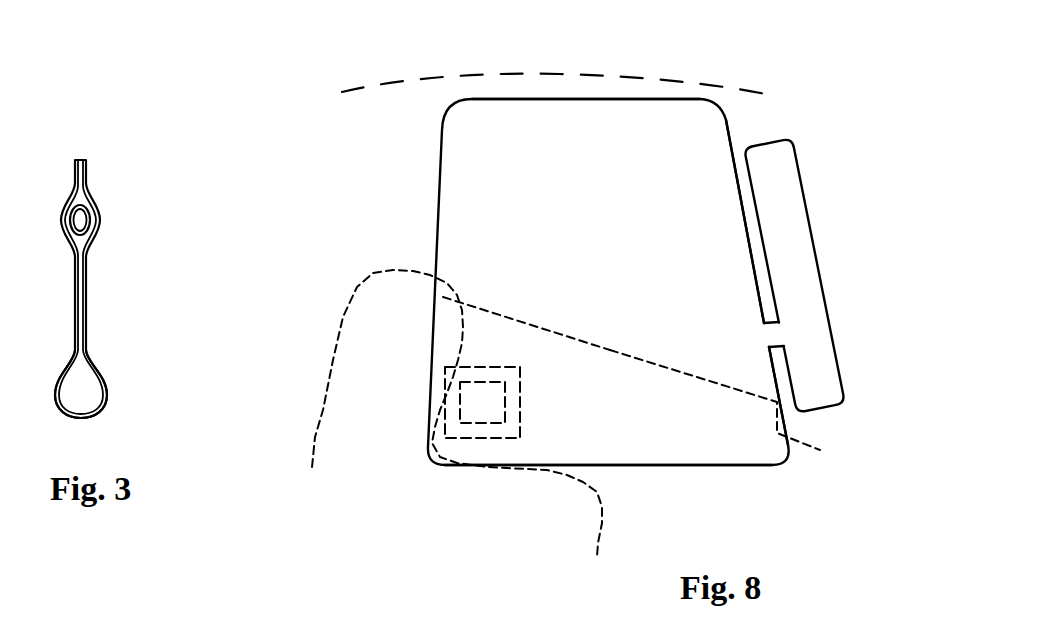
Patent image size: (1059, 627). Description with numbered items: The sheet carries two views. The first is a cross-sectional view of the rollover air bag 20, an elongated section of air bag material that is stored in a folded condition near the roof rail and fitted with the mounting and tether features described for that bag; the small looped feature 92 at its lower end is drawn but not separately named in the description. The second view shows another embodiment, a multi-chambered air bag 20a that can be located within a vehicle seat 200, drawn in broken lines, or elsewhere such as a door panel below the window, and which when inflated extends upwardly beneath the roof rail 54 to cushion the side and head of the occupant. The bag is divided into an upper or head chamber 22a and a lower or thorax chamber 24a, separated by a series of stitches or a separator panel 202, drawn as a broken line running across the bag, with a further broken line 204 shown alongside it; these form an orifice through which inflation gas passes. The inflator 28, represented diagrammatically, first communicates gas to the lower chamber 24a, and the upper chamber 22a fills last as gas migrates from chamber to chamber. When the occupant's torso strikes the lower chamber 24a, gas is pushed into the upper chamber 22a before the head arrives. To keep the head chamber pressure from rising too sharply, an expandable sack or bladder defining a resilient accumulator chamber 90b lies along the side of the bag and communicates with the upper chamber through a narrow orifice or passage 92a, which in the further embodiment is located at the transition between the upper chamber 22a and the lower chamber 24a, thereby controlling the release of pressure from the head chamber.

In FIG. 3, the rollover air bag 20 is at (92, 198).
In FIG. 3, the loop end of strap 92 is at (82, 401).
In FIG. 8, the multi-chambered air bag 20a is at (498, 89).
In FIG. 8, the roof rail 54 is at (628, 90).
In FIG. 8, the upper glass portion 22a is at (630, 200).
In FIG. 8, the lower glass portion 24a is at (616, 386).
In FIG. 8, the pillar trim strip 90b is at (795, 268).
In FIG. 8, the narrow orifice or passage 92a is at (783, 337).
In FIG. 8, the vehicle seat 200 is at (397, 352).
In FIG. 8, the stitches or separator panel 202 is at (545, 322).
In FIG. 8, the split line segment 204 is at (595, 340).
In FIG. 8, the inflator 28 is at (476, 393).